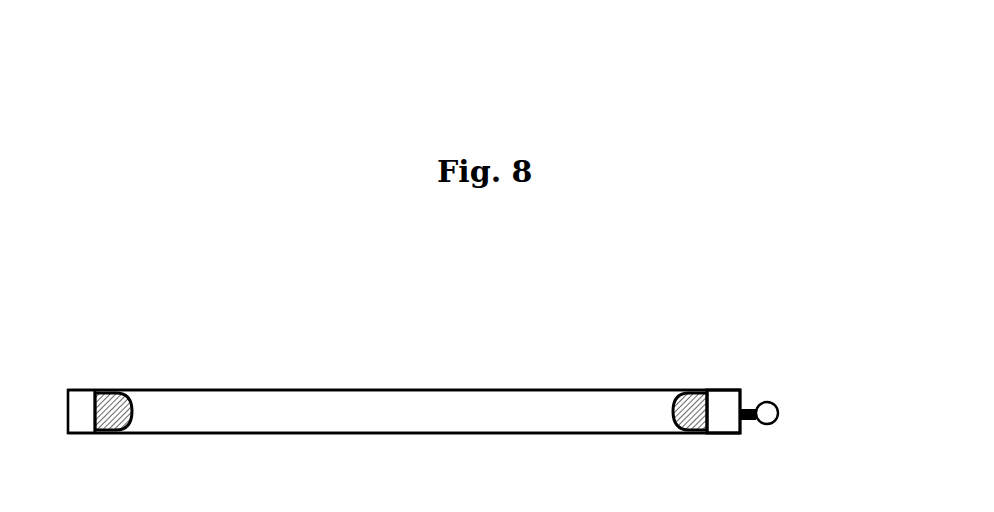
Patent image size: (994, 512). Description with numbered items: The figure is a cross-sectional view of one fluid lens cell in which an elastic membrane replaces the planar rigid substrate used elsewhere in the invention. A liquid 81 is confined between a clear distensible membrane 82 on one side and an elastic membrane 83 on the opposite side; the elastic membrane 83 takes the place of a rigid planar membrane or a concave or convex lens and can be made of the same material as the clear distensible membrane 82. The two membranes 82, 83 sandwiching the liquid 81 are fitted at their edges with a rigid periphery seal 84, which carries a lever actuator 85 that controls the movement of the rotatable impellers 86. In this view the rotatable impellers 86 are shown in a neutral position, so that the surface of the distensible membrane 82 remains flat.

The liquid 81 is at (335, 425).
The clear distensible membrane 82 is at (512, 391).
The elastic membrane 83 is at (464, 431).
The rigid periphery seal 84 is at (728, 407).
The lever actuator 85 is at (778, 409).
The rotatable impellers 86 is at (763, 414).